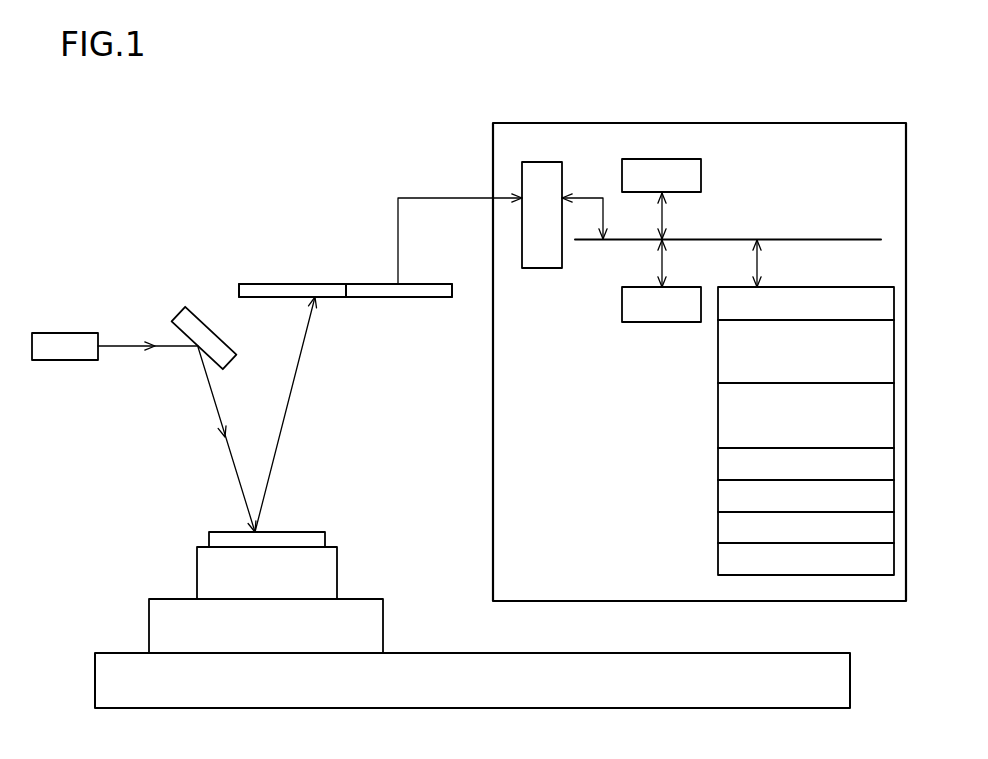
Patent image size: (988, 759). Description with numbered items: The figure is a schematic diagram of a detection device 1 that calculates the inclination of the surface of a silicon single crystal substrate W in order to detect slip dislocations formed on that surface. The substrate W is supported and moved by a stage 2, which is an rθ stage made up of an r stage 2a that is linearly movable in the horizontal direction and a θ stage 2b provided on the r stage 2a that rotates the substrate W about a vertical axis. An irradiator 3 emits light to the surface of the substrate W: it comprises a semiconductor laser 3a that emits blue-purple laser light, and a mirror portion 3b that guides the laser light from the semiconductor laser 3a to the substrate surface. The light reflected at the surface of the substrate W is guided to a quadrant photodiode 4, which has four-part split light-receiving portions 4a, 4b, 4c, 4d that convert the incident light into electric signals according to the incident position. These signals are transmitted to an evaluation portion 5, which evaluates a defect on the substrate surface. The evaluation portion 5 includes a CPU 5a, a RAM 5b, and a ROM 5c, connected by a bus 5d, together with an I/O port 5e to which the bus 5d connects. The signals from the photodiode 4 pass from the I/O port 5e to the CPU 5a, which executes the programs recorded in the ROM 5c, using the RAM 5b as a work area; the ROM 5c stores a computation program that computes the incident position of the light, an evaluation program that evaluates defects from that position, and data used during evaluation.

The detection device 1 is at (110, 185).
The stage 2 is at (148, 570).
The r stage 2a is at (383, 625).
The θ stage 2b is at (337, 572).
The substrate W is at (325, 535).
The irradiator 3 is at (150, 253).
The semiconductor laser 3a is at (78, 333).
The mirror portion 3b is at (178, 311).
The quadrant photodiode 4 is at (305, 284).
The light-receiving portion 4a is at (290, 297).
The light-receiving portion 4b is at (292, 290).
The light-receiving portion 4c is at (400, 297).
The light-receiving portion 4d is at (399, 290).
The evaluation portion 5 is at (588, 123).
The CPU 5a is at (703, 173).
The RAM 5b is at (655, 322).
The ROM 5c is at (838, 287).
The bus 5d is at (800, 239).
The I/O port 5e is at (565, 176).